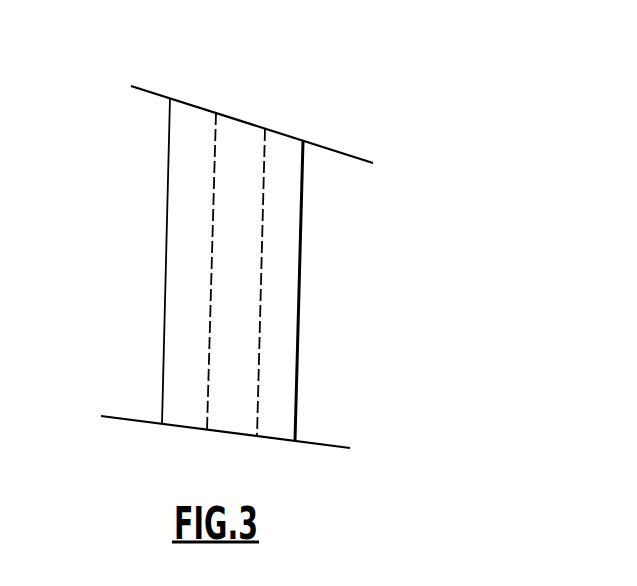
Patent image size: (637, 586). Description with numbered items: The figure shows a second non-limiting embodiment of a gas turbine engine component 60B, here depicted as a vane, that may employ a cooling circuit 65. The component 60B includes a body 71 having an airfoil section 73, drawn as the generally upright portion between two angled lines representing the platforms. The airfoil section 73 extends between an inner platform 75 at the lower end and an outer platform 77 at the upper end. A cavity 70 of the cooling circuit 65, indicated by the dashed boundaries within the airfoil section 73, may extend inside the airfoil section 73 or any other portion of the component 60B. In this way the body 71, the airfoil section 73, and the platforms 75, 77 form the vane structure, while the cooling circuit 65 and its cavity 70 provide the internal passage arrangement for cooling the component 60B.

The component 60B is at (370, 130).
The body 71 is at (140, 212).
The cooling circuit 65 is at (240, 140).
The cavity 70 is at (263, 247).
The airfoil section 73 is at (277, 363).
The outer platform 77 is at (355, 158).
The inner platform 75 is at (330, 448).